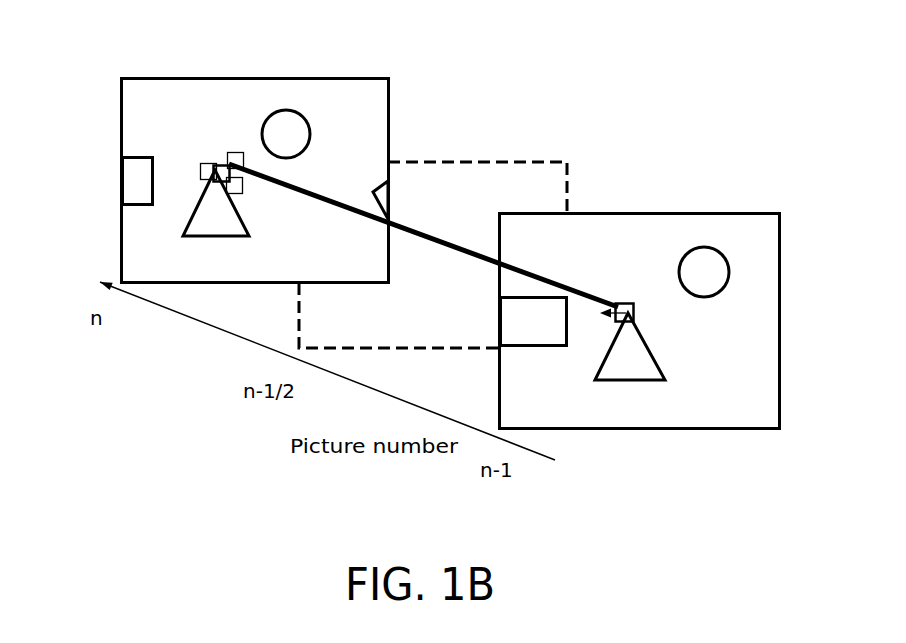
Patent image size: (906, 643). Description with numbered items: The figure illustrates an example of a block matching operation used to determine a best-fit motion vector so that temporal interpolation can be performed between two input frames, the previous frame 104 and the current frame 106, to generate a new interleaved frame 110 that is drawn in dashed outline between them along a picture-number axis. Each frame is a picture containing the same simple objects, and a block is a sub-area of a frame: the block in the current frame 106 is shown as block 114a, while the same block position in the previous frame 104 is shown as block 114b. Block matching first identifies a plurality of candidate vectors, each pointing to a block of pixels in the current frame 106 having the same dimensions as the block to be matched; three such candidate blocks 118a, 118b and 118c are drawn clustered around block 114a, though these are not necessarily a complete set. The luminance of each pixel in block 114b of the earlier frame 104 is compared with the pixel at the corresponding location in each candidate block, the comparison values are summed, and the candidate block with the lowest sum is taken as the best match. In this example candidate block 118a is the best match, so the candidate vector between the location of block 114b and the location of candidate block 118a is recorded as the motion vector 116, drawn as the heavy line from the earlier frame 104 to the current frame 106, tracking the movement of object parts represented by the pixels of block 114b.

The previous frame 104 is at (722, 428).
The current frame 106 is at (367, 77).
The interleaved frame 110 is at (543, 157).
The block in current frame 114a is at (222, 165).
The block in previous frame 114b is at (633, 303).
The motion vector 116 is at (623, 316).
The candidate block 118a is at (200, 170).
The candidate block 118b is at (233, 155).
The candidate block 118c is at (236, 190).